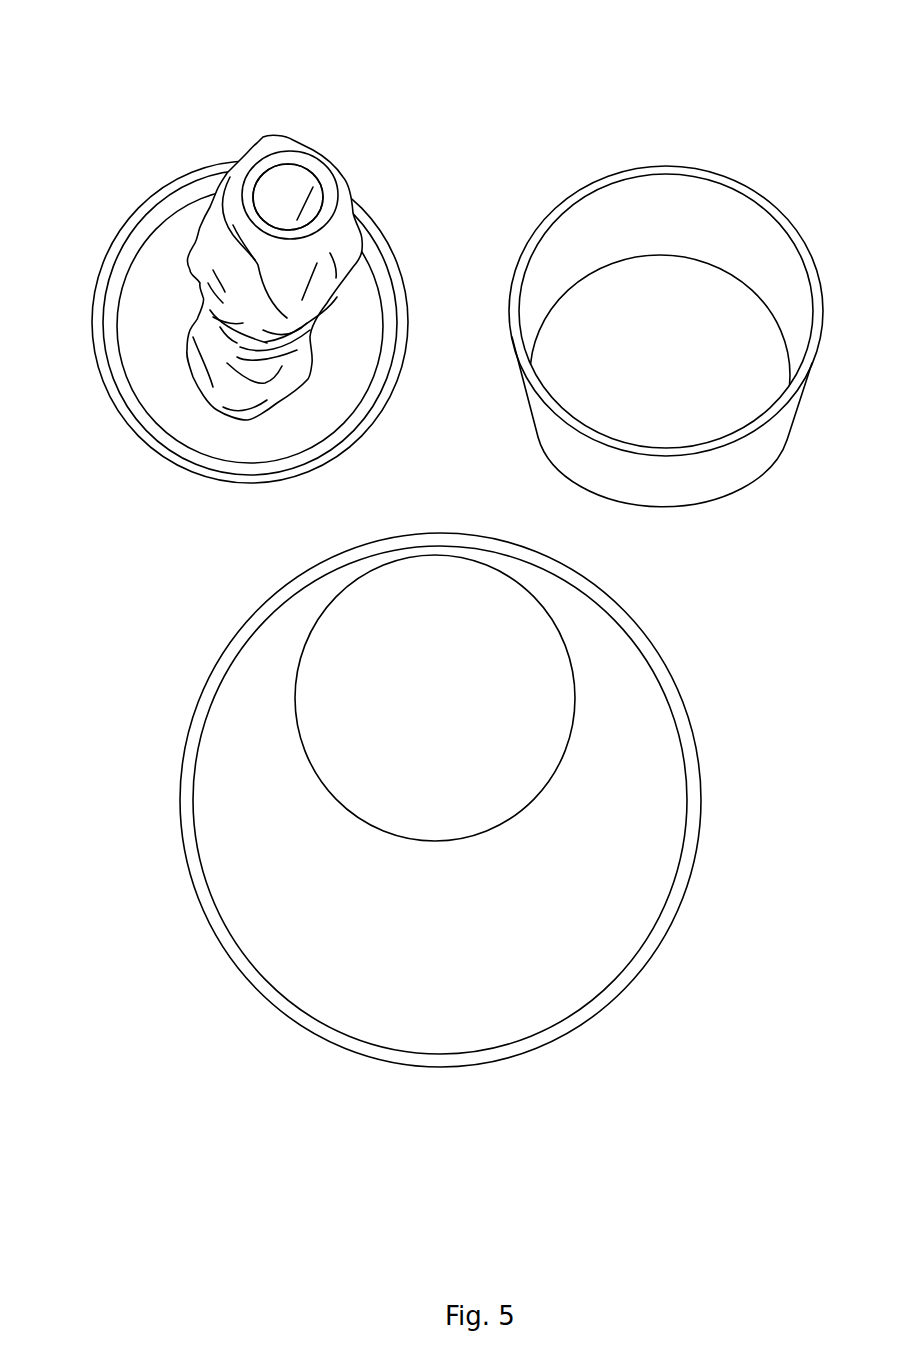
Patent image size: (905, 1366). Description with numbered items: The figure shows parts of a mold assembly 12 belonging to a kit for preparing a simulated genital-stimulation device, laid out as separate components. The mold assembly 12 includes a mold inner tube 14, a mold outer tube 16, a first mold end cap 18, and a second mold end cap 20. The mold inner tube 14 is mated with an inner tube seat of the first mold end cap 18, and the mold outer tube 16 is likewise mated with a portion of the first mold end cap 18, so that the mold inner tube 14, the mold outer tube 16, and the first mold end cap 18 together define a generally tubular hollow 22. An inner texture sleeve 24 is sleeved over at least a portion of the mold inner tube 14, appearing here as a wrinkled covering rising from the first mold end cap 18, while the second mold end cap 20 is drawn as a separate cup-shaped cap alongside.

The mold assembly 12 is at (178, 46).
The mold inner tube 14 is at (305, 180).
The mold outer tube 16 is at (187, 741).
The first mold end cap 18 is at (118, 222).
The second mold end cap 20 is at (637, 167).
The tubular hollow 22 is at (402, 734).
The inner texture sleeve 24 is at (353, 172).